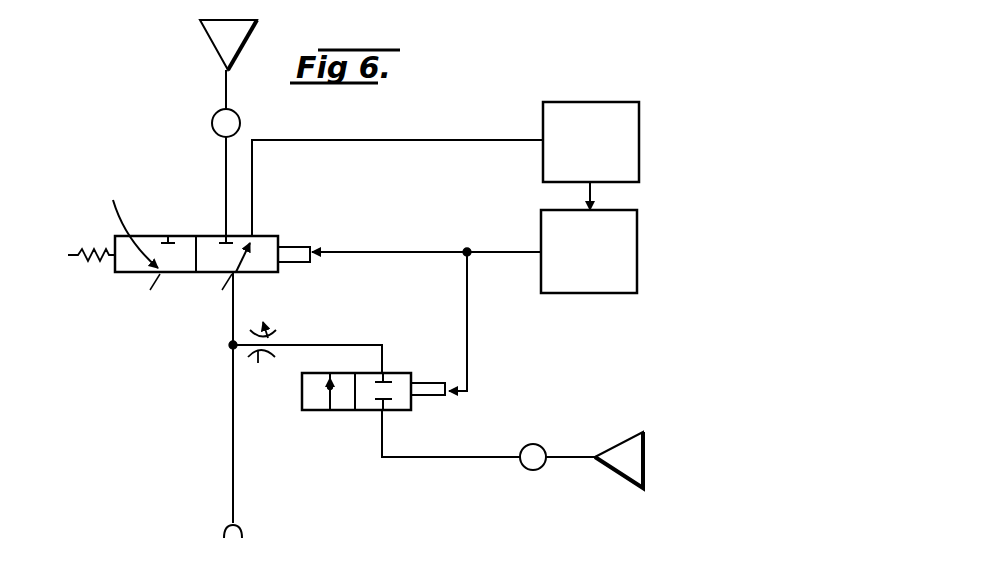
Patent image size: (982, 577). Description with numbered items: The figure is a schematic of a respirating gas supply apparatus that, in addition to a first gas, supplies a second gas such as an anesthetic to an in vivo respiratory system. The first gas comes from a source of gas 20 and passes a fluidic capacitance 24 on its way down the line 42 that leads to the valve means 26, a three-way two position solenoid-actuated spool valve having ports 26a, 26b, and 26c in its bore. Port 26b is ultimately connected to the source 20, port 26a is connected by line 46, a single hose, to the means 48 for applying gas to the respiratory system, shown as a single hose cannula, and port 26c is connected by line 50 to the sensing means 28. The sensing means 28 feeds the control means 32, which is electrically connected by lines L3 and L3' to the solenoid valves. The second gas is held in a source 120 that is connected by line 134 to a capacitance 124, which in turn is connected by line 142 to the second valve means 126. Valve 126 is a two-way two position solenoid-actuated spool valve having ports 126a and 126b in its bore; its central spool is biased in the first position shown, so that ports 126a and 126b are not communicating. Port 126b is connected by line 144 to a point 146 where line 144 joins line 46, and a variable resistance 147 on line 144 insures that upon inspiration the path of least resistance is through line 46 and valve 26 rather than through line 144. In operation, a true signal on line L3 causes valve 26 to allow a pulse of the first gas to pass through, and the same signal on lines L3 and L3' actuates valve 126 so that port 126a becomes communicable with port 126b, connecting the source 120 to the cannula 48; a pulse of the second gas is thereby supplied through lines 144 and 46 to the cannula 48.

The source of gas 20 is at (248, 42).
The fluidic capacitance 24 is at (238, 116).
The valve means 26 is at (189, 254).
The port 26a is at (178, 290).
The port 26b is at (222, 236).
The port 26c is at (168, 236).
The sensing means 28 is at (582, 102).
The control means 32 is at (575, 293).
The line 42 is at (226, 162).
The line 46 is at (234, 448).
The means for applying gas to an in vivo respiratory system 48 is at (245, 526).
The line 50 is at (405, 140).
The line L3 is at (426, 236).
The line L3' is at (482, 321).
The source of a second gas 120 is at (612, 468).
The capacitance 124 is at (522, 470).
The second valve means 126 is at (92, 215).
The port 126a is at (331, 411).
The port 126b is at (330, 373).
The line 134 is at (572, 456).
The line 142 is at (405, 459).
The line 144 is at (344, 345).
The point 146 is at (226, 346).
The variable resistance 147 is at (279, 325).